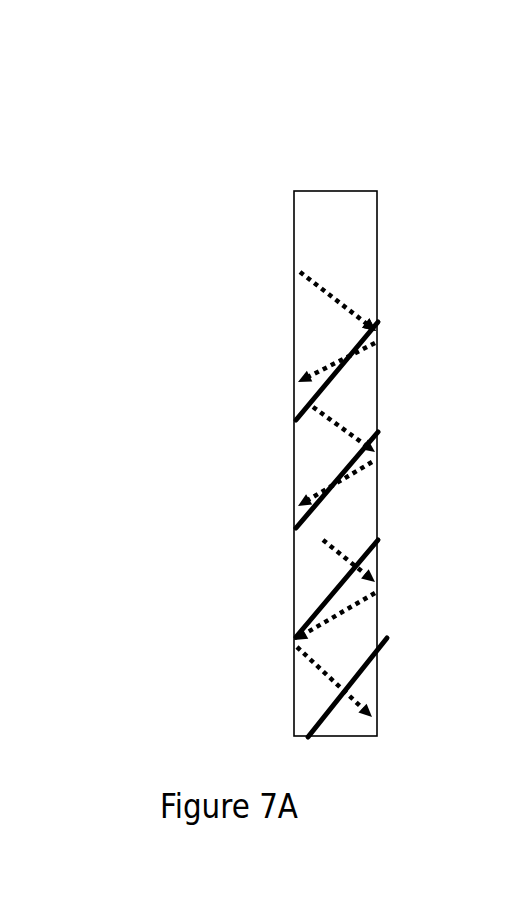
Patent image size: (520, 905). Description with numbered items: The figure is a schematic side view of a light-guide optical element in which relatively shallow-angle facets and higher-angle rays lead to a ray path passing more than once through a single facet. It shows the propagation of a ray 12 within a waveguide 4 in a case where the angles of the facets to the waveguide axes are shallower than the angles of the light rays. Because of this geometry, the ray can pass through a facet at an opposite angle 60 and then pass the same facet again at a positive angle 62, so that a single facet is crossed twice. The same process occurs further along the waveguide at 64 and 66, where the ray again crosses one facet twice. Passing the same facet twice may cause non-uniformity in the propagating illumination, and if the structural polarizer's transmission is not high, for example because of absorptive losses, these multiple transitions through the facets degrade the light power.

The waveguide 4 is at (356, 191).
The ray 12 is at (335, 485).
The opposite angle 60 is at (345, 370).
The positive angle 62 is at (378, 333).
The opposite-angle facet pass 64 is at (305, 522).
The positive-angle facet pass 66 is at (305, 507).